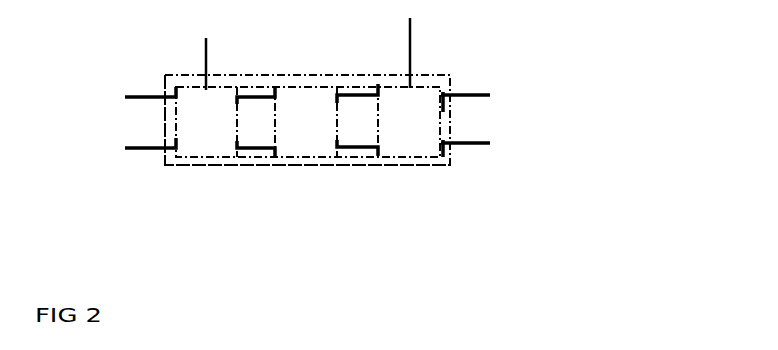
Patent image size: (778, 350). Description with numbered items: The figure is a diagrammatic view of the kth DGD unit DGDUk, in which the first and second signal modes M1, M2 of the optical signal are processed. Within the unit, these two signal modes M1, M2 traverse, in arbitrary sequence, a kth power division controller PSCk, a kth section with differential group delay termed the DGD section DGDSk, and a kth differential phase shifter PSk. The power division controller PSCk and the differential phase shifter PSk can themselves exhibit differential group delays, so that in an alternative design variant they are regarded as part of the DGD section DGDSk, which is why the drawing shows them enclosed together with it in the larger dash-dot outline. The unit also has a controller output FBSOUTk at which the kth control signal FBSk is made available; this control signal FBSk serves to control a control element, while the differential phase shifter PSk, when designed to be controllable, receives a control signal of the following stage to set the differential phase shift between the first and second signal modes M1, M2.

The first signal mode M1 is at (153, 106).
The second signal mode M2 is at (153, 158).
The control signal FBSk is at (233, 50).
The controller output FBSOUTk is at (203, 88).
The power division controller PSCk is at (193, 158).
The differential phase shifter PSk is at (418, 156).
The DGD section DGDSk is at (287, 160).
The DGD unit DGDUk is at (430, 160).